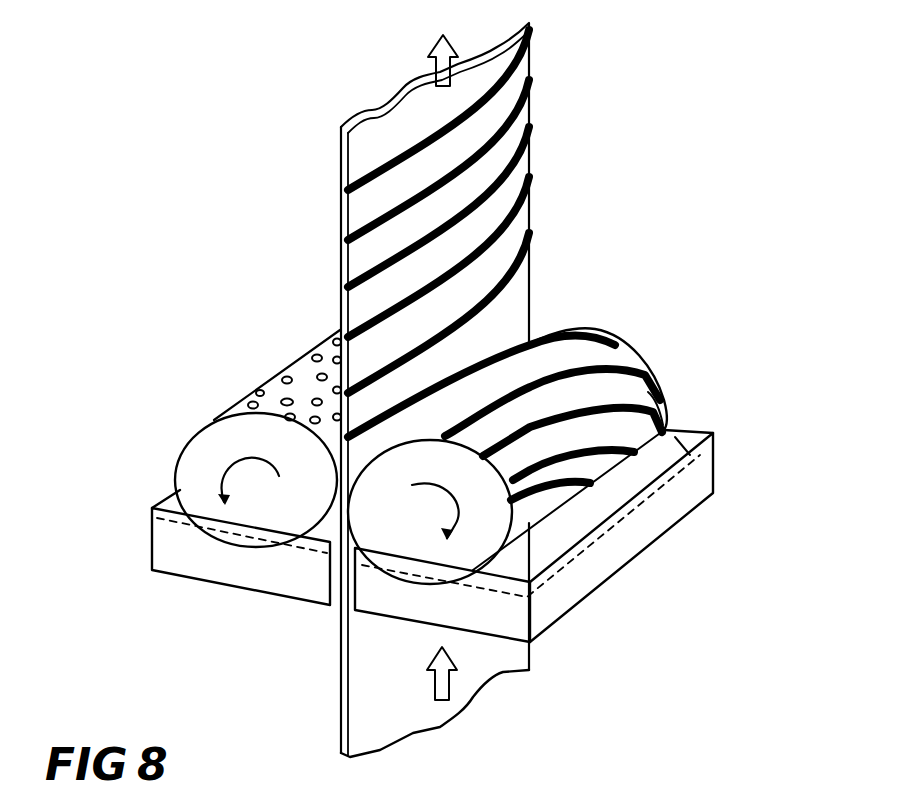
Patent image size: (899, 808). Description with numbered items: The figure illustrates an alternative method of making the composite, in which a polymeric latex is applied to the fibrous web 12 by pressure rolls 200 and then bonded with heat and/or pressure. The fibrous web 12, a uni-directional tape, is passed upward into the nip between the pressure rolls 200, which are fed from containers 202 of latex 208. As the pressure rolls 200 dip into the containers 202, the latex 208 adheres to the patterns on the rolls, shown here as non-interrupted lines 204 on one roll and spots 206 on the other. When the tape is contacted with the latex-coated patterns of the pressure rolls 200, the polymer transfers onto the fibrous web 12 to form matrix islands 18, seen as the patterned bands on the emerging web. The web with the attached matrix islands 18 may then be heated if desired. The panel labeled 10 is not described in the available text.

The panel 10 is at (513, 87).
The fibrous web 12 is at (478, 697).
The matrix islands 18 is at (510, 177).
The pressure rolls 200 is at (187, 441).
The containers 202 is at (177, 567).
The non-interrupted lines 204 is at (648, 392).
The spots 206 is at (275, 373).
The latex 208 is at (675, 437).